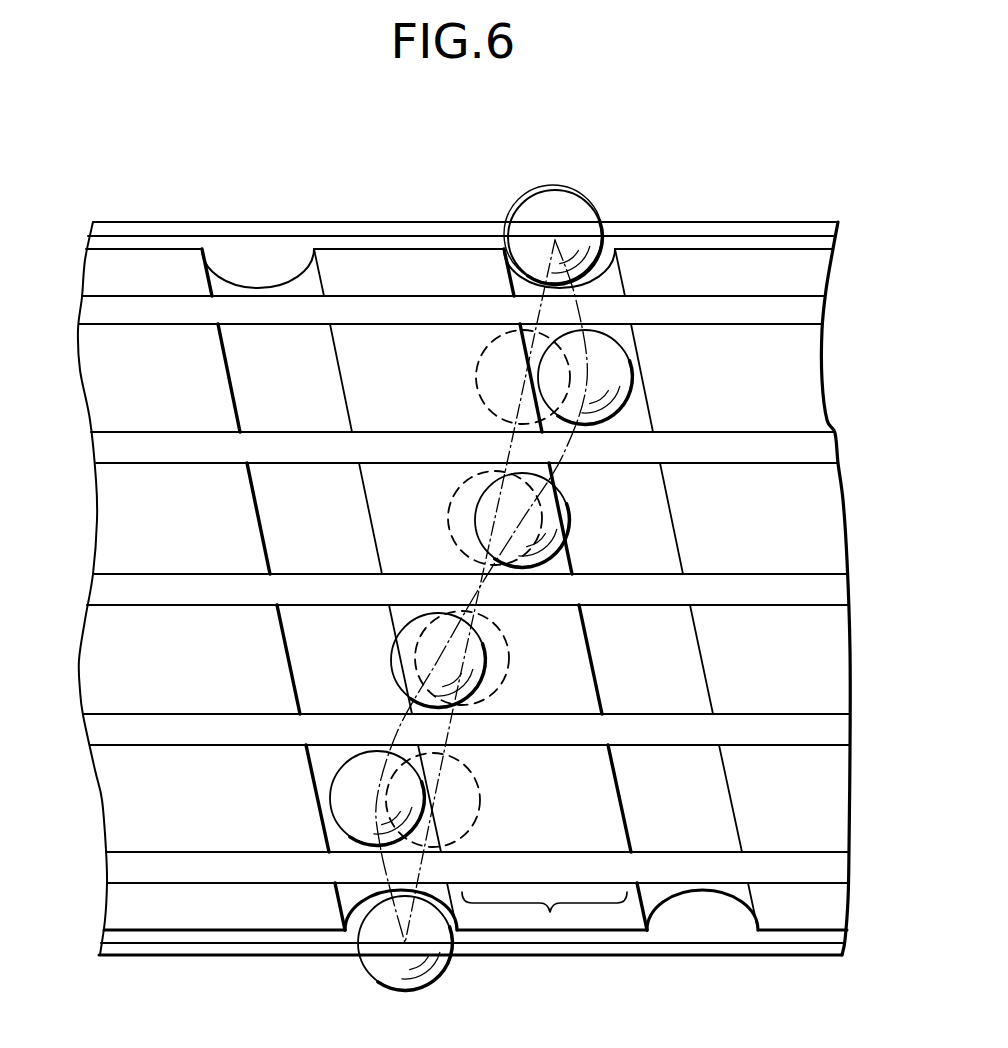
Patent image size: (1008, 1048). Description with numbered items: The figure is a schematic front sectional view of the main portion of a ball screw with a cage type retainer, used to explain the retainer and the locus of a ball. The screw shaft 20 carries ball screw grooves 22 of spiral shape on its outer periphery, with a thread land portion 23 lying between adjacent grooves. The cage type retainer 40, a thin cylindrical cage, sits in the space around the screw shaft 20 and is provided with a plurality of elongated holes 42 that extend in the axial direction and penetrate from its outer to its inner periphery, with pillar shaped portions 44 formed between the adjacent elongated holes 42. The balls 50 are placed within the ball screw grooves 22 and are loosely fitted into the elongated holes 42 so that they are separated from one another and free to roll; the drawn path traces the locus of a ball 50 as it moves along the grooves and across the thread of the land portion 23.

The screw shaft 20 is at (807, 379).
The ball screw grooves 22 is at (692, 892).
The land portion 23 is at (550, 912).
The cage type retainer 40 is at (693, 235).
The elongated holes 42 is at (355, 270).
The pillar shaped portions 44 is at (427, 308).
The balls 50 is at (387, 977).